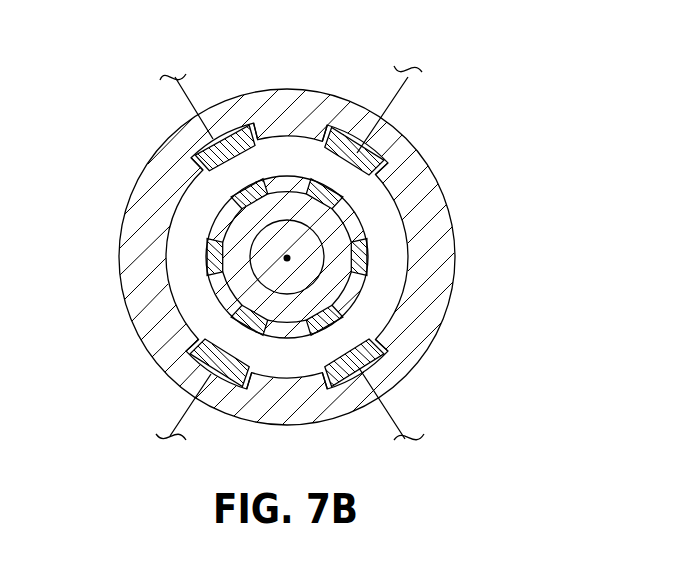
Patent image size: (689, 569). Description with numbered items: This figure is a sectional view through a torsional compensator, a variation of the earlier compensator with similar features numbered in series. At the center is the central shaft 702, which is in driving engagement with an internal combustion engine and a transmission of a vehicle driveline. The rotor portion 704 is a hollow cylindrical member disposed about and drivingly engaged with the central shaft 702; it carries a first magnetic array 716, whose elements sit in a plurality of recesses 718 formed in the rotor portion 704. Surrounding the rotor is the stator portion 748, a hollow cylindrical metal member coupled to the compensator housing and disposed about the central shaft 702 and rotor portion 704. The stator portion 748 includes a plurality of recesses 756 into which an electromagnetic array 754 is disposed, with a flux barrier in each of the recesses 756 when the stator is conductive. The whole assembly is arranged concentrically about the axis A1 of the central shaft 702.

The stator portion 748 is at (294, 78).
The electromagnetic array 754 is at (250, 128).
The recesses 756 is at (330, 126).
The central shaft 702 is at (312, 237).
The rotor portion 704 is at (350, 271).
The first magnetic array 716 is at (335, 182).
The recesses 718 is at (220, 214).
The central axis A1 is at (291, 257).